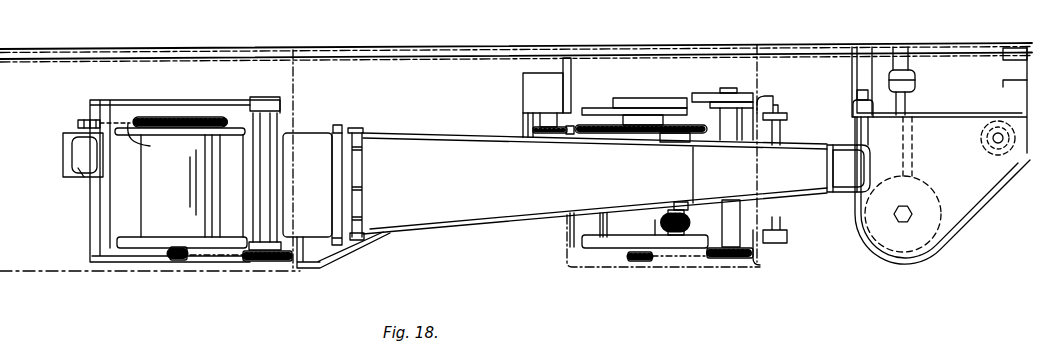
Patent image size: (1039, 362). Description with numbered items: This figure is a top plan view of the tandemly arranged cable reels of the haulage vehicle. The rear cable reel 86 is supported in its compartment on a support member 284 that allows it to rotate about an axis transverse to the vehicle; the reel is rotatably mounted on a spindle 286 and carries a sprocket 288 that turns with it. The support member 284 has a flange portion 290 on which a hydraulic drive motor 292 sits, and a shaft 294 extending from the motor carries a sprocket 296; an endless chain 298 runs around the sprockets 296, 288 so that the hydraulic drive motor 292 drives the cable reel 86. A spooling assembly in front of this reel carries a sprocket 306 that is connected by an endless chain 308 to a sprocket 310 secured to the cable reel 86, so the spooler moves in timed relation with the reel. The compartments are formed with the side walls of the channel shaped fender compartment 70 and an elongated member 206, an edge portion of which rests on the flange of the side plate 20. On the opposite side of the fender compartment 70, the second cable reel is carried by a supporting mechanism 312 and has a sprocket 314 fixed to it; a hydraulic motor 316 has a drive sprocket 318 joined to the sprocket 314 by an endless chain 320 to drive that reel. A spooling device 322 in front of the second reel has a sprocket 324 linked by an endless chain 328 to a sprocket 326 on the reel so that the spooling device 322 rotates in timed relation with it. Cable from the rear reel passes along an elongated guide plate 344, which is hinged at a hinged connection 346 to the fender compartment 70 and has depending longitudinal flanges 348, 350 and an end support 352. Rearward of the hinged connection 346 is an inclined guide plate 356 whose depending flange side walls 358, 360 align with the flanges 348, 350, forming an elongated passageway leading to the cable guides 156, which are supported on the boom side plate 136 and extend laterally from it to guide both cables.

The boom side plate 136 is at (268, 50).
The side plate 20 is at (190, 53).
The support member 284 is at (238, 102).
The cable reel 86 is at (190, 189).
The spindle 286 is at (180, 116).
The sprocket 288 is at (167, 117).
The endless chain 298 is at (141, 142).
The sprocket 296 is at (85, 121).
The shaft 294 is at (72, 134).
The flange portion 290 is at (66, 162).
The hydraulic drive motor 292 is at (80, 174).
The sprocket 310 is at (167, 258).
The endless chain 308 is at (217, 261).
The sprocket 306 is at (277, 262).
The elongated member 206 is at (78, 258).
The depending flange side wall 360 is at (308, 130).
The inclined guide plate 356 is at (315, 145).
The hinged connection 346 is at (363, 130).
The depending flange side wall 358 is at (317, 264).
The fender compartment 70 is at (470, 98).
The depending longitudinal flange 348 is at (460, 137).
The elongated guide plate 344 is at (483, 197).
The depending longitudinal flange 350 is at (538, 217).
The sprocket 326 is at (643, 262).
The endless chain 328 is at (692, 261).
The sprocket 324 is at (738, 259).
The spooling device 322 is at (731, 240).
The hydraulic motor 316 is at (533, 92).
The drive sprocket 318 is at (533, 130).
The endless chain 320 is at (567, 137).
The sprocket 314 is at (635, 134).
The supporting mechanism 312 is at (670, 110).
The end support 352 is at (887, 141).
The cable guides 156 is at (996, 200).